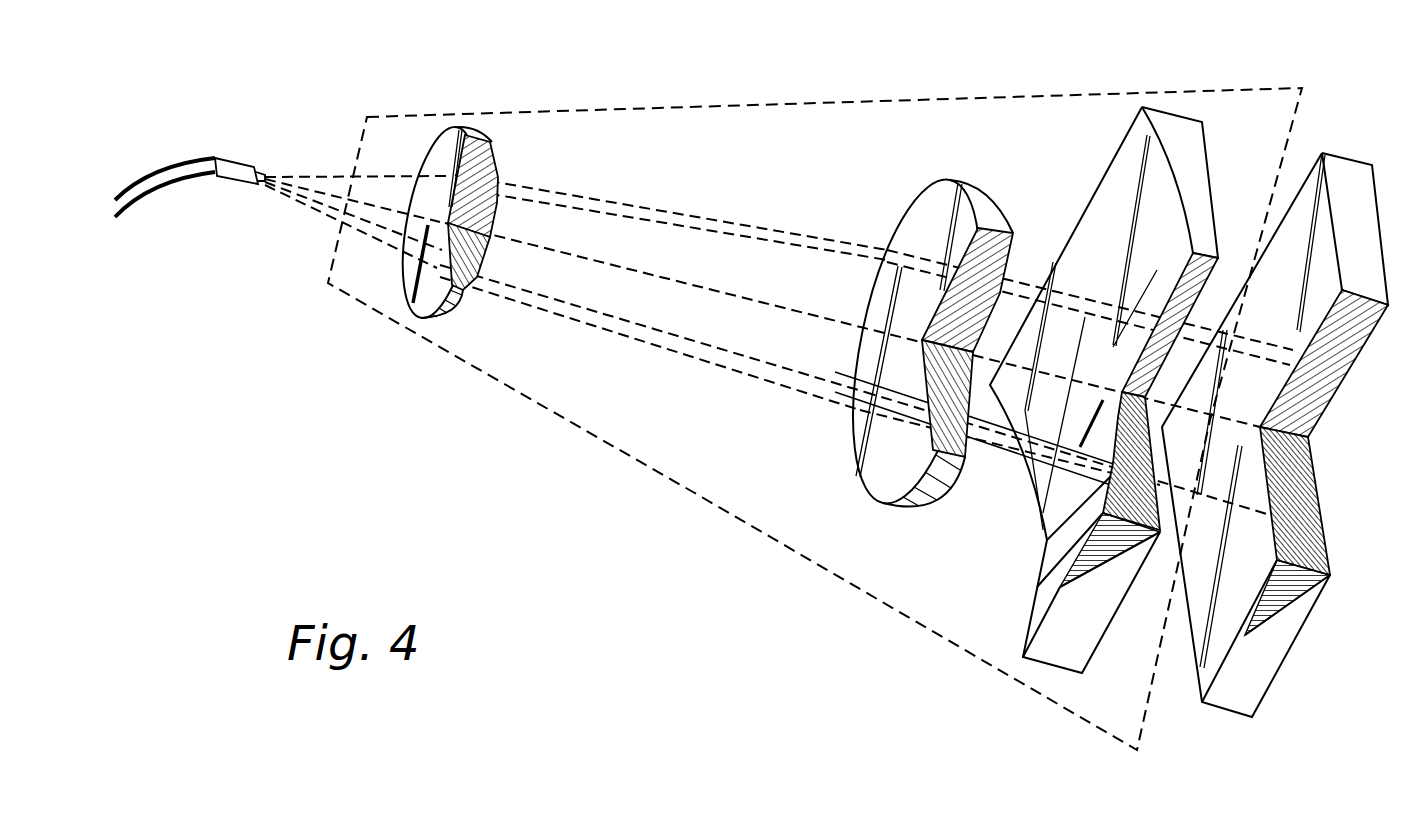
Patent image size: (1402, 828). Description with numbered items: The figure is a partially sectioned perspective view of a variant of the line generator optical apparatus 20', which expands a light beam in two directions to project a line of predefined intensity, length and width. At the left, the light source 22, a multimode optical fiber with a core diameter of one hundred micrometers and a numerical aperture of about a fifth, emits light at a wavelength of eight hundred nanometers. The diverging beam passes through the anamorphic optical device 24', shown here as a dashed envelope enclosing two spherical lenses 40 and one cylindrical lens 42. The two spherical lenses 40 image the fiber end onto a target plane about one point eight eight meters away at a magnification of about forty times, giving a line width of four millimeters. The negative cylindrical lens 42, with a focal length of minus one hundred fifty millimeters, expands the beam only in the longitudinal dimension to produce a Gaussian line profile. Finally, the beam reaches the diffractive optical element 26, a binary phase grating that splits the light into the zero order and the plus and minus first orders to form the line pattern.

The line generator optical apparatus 20' is at (724, 345).
The light source 22 is at (240, 172).
The anamorphic optical device 24' is at (815, 419).
The diffractive optical element 26 is at (1350, 207).
The spherical lenses 40 is at (496, 136).
The cylindrical lens 42 is at (1118, 207).